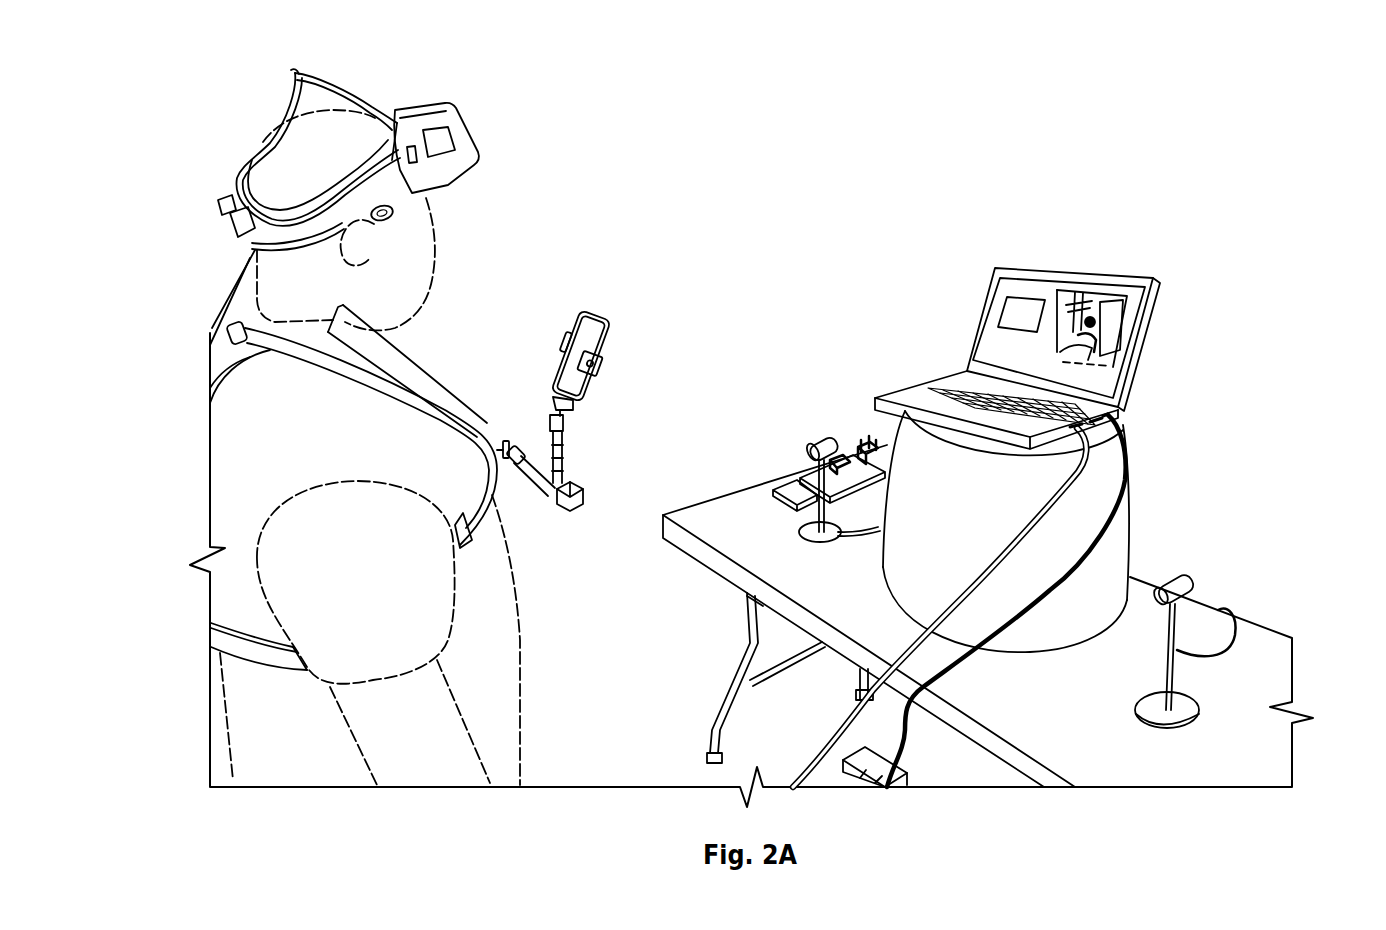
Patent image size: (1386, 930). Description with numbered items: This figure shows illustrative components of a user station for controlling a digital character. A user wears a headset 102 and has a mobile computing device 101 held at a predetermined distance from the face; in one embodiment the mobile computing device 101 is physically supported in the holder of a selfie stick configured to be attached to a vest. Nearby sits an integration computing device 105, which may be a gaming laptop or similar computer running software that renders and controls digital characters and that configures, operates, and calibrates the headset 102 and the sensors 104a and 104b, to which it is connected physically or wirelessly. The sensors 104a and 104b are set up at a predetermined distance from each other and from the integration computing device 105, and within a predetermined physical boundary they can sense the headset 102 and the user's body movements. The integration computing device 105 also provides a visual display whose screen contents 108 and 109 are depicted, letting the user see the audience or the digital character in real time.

The mobile computing device 101 is at (600, 308).
The headset 102 is at (476, 135).
The sensor 104a is at (820, 442).
The sensor 104b is at (1183, 570).
The integration computing device 105 is at (1140, 273).
The displayed image / video feed 108 is at (1112, 332).
The display window 109 is at (1000, 318).